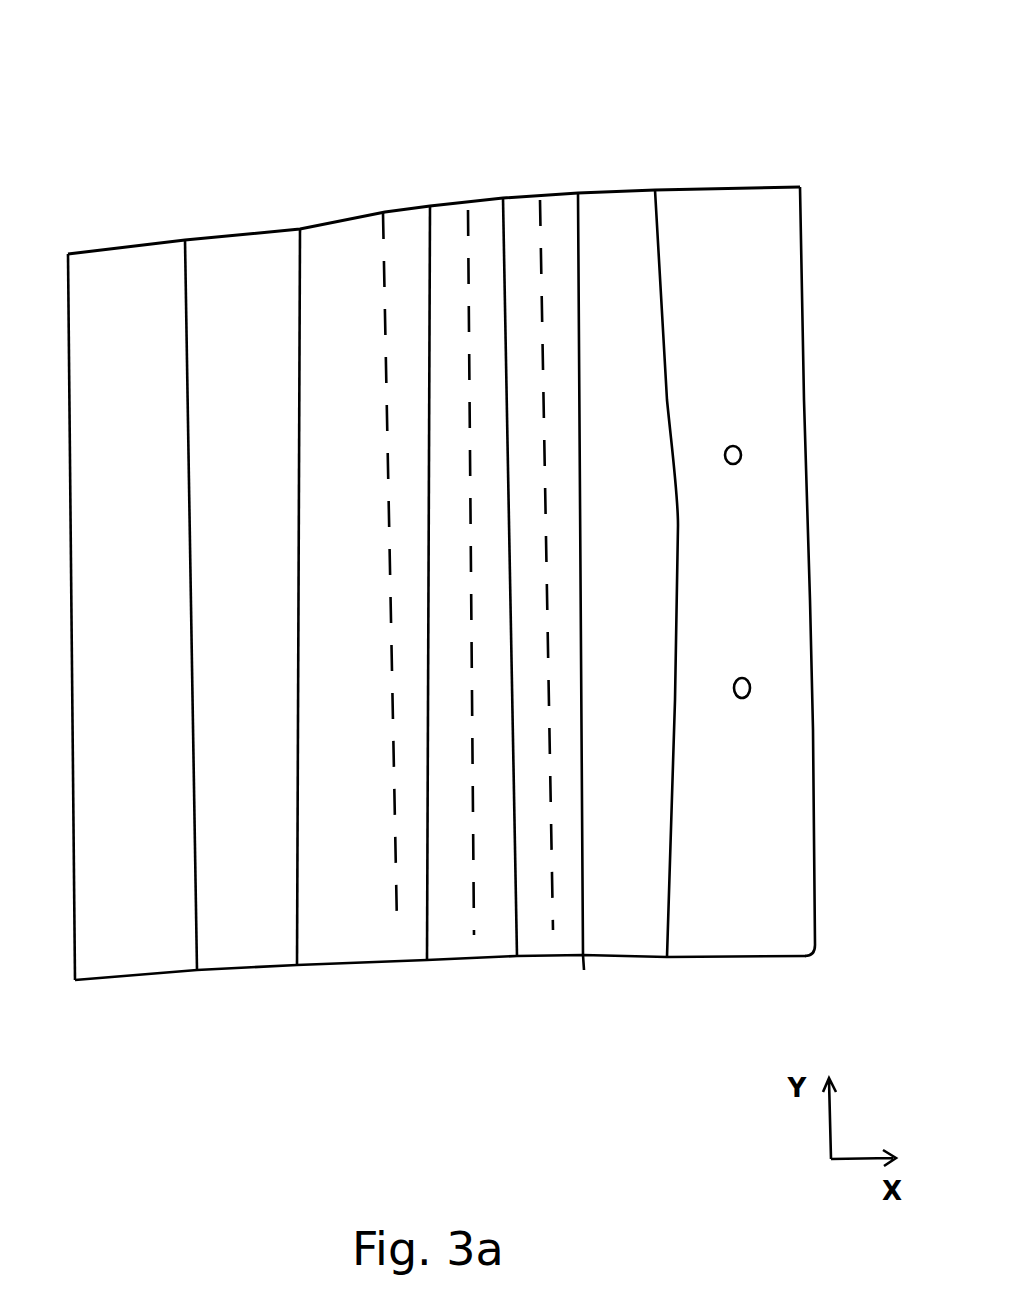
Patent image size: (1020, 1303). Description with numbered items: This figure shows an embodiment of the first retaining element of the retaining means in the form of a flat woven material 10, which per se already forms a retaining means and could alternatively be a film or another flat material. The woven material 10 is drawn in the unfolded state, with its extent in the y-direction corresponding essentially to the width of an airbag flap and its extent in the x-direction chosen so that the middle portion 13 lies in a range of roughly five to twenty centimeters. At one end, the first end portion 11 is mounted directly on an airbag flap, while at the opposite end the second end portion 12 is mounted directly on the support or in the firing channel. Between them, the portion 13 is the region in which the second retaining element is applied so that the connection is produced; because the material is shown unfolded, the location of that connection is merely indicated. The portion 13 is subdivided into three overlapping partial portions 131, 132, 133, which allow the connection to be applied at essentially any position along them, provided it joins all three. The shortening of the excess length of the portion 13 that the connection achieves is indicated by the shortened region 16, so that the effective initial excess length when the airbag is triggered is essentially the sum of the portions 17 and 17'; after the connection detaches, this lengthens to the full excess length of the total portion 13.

The woven material 10 is at (133, 240).
The first end portion 11 is at (283, 990).
The second end portion 12 is at (587, 980).
The portion 13 is at (293, 1022).
The first partial portion 131 is at (293, 210).
The second partial portion 132 is at (430, 200).
The third partial portion 133 is at (507, 197).
The shortened region 16 is at (383, 82).
The portion 17 is at (340, 490).
The portion 17' is at (561, 475).